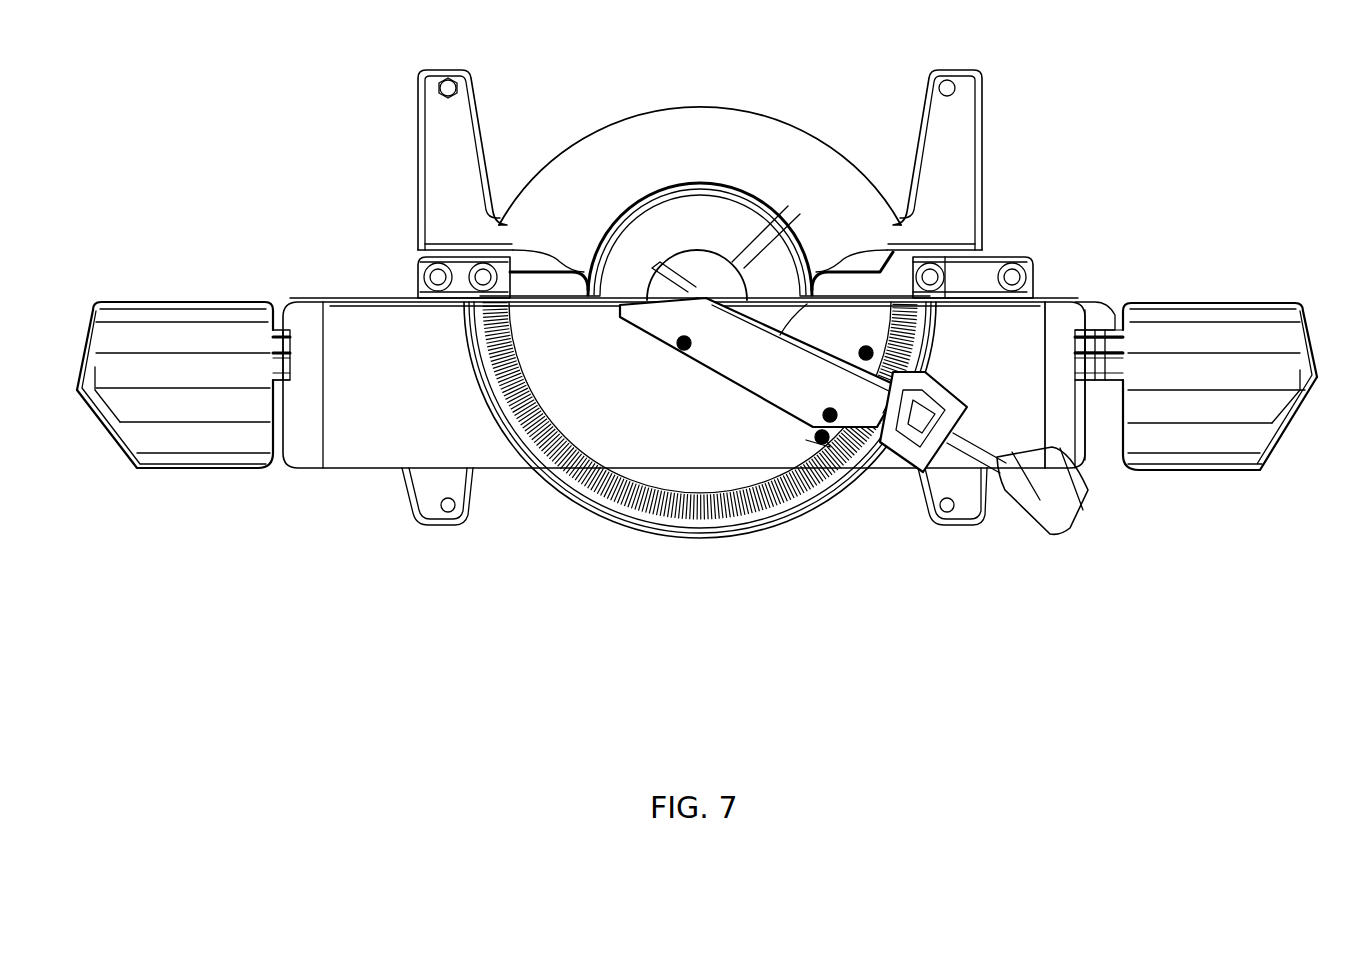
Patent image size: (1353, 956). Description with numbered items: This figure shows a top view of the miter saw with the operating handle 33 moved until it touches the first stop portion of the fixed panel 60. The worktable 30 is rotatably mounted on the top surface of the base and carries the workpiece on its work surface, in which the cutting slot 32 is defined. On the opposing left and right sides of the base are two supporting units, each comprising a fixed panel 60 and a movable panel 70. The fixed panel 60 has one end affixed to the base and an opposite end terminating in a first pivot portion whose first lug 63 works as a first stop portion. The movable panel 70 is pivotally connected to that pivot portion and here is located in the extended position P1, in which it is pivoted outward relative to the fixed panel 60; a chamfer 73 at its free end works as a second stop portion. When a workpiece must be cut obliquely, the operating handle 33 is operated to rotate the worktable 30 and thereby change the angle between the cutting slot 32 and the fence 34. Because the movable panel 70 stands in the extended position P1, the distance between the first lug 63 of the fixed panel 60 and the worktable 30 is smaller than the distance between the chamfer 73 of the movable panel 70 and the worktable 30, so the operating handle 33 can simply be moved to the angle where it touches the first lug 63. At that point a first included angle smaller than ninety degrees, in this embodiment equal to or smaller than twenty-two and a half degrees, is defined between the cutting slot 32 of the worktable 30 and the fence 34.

The extended position P1 is at (160, 238).
The worktable 30 is at (642, 452).
The cutting slot 32 is at (800, 340).
The operating handle 33 is at (1035, 508).
The fence 34 is at (1007, 248).
The fixed panel 60 is at (1095, 285).
The first lug 63 is at (1105, 452).
The movable panel 70 is at (1220, 363).
The chamfer 73 is at (1290, 440).